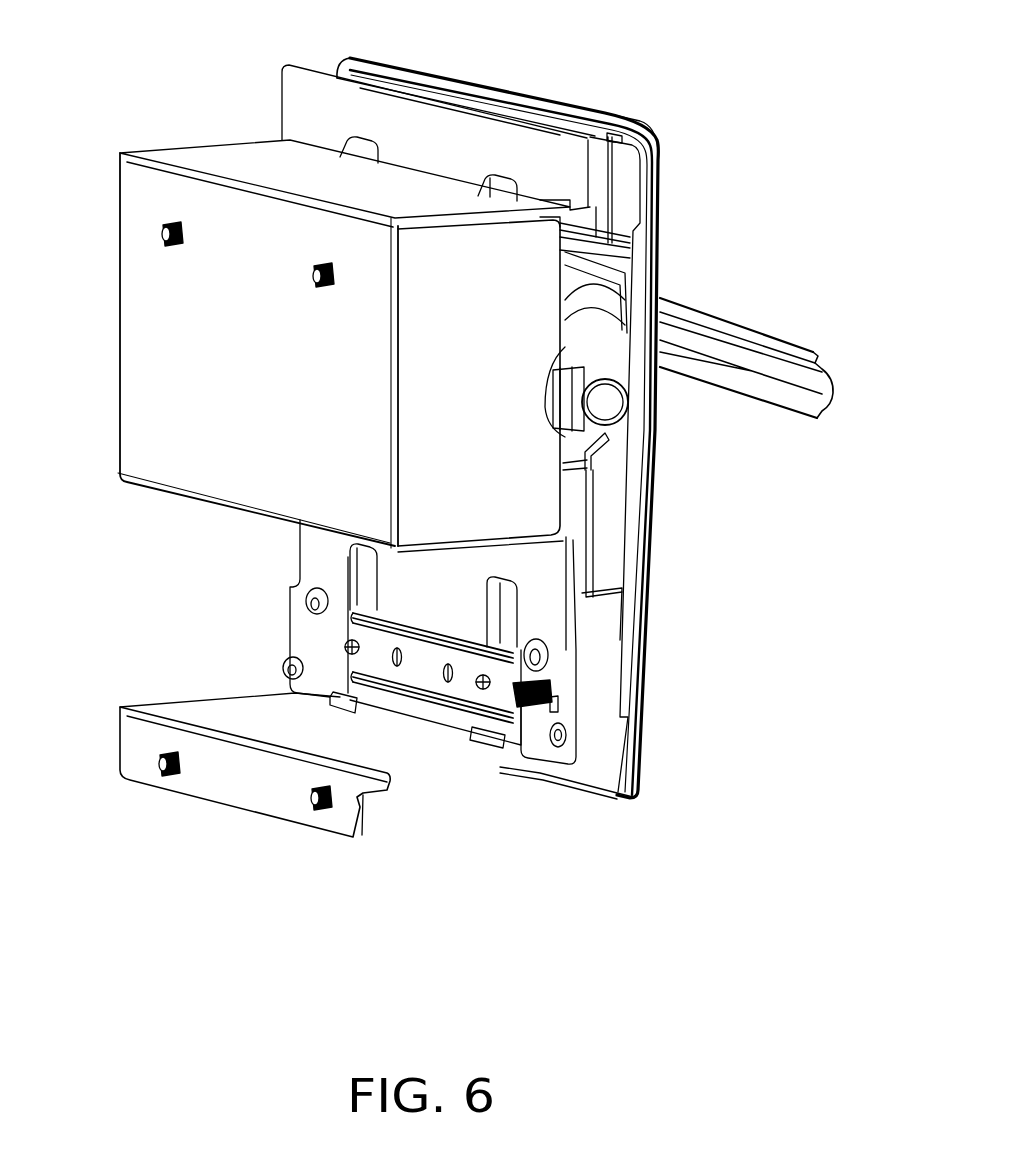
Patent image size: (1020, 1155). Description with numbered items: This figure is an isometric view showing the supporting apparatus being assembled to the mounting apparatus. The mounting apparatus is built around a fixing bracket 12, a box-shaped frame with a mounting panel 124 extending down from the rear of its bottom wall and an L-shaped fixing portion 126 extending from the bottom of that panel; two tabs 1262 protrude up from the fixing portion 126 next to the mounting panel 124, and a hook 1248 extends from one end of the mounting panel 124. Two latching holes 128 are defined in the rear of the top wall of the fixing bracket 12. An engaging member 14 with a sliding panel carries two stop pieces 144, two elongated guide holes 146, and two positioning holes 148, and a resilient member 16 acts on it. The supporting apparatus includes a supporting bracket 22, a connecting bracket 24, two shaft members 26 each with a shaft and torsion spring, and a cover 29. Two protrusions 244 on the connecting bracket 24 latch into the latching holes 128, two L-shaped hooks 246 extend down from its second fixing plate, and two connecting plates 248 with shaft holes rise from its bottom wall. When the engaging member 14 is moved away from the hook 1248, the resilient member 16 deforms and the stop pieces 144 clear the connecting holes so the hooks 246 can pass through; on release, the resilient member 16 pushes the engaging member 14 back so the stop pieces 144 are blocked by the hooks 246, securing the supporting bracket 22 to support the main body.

The fixing bracket 12 is at (210, 157).
The latching holes 128 is at (500, 188).
The protrusions 244 is at (505, 189).
The cover 29 is at (625, 170).
The supporting bracket 22 is at (722, 317).
The shaft members 26 is at (613, 407).
The connecting plates 248 is at (577, 440).
The connecting bracket 24 is at (573, 508).
The mounting panel 124 is at (520, 568).
The L-shaped hooks 246 is at (520, 610).
The stop pieces 144 is at (498, 626).
The resilient member 16 is at (555, 685).
The hook 1248 is at (550, 705).
The tabs 1262 is at (478, 742).
The positioning holes 148 is at (440, 683).
The guide holes 146 is at (375, 652).
The engaging member 14 is at (350, 630).
The fixing portion 126 is at (250, 787).